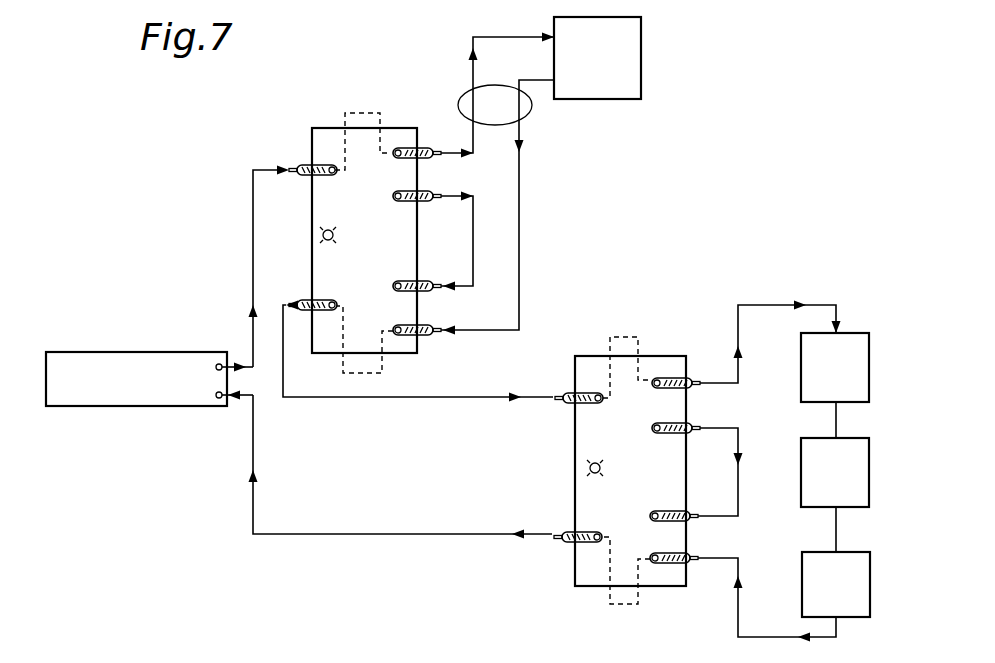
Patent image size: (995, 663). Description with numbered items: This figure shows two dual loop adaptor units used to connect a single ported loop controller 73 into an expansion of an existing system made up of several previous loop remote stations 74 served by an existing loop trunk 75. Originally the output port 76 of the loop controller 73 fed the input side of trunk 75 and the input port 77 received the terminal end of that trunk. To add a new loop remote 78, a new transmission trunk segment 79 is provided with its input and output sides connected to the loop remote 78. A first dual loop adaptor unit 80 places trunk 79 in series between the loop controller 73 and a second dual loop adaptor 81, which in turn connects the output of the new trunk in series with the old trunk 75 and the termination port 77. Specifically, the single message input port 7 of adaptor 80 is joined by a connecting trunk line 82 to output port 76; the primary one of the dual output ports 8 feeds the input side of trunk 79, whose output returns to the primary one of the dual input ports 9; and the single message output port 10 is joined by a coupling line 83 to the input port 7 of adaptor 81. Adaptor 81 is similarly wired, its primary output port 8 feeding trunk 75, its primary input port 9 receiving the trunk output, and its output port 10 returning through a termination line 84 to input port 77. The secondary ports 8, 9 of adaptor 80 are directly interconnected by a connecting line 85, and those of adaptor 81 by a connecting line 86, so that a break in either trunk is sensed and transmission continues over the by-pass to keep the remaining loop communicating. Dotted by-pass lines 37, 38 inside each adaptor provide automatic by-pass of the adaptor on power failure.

The single message input port 7 is at (330, 174).
The dual message output ports 8 is at (400, 160).
The dual message input ports 9 is at (393, 328).
The single message output port 10 is at (333, 311).
The by-pass line 37 is at (367, 113).
The by-pass line 38 is at (343, 373).
The single ported loop controller 73 is at (200, 394).
The loop remote stations 74 is at (815, 402).
The existing loop trunk 75 is at (738, 368).
The output port 76 is at (216, 363).
The input port 77 is at (216, 399).
The new loop remote 78 is at (601, 93).
The new transmission trunk segment 79 is at (473, 147).
The first dual loop adaptor unit 80 is at (377, 272).
The second dual loop adaptor 81 is at (646, 505).
The connecting trunk line 82 is at (253, 262).
The coupling line 83 is at (395, 397).
The termination line 84 is at (430, 534).
The connecting line 85 is at (473, 235).
The connecting line 86 is at (738, 473).